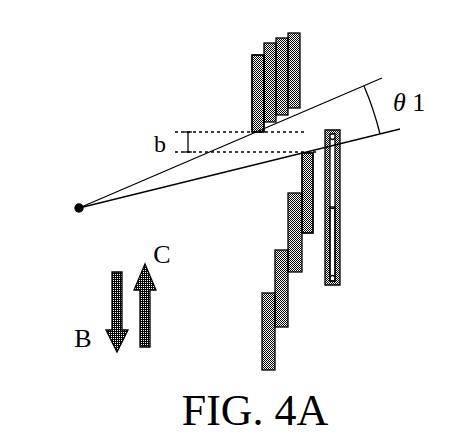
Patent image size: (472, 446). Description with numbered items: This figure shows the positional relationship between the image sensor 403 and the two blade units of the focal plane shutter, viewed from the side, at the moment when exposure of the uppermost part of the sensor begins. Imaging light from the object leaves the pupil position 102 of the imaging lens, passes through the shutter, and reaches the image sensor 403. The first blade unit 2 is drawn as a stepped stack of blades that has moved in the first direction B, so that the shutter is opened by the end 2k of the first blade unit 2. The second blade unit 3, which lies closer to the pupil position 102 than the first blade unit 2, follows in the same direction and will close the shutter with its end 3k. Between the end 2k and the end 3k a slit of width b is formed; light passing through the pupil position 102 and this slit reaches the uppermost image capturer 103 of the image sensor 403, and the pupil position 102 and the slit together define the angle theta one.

The first blade unit 2 is at (263, 333).
The end of the first blade unit 2k is at (303, 155).
The second blade unit 3 is at (252, 82).
The end of the second blade unit 3k is at (253, 128).
The pupil position 102 is at (78, 207).
The uppermost image capturer 103 is at (340, 143).
The image sensor 403 is at (340, 263).